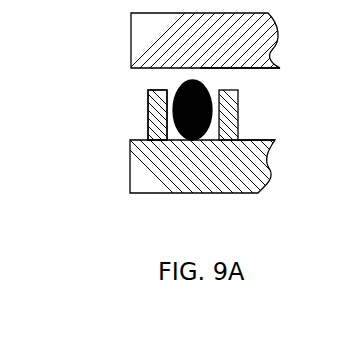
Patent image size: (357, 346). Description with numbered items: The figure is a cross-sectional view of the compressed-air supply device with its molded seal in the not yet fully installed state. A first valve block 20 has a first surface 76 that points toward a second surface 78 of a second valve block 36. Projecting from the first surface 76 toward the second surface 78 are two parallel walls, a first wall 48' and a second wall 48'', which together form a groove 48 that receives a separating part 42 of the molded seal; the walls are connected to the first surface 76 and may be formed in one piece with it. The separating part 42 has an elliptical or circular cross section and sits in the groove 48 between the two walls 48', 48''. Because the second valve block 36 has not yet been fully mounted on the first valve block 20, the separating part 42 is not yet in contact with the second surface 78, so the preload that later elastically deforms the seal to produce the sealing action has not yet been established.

The second valve block 36 is at (266, 28).
The second surface 78 is at (256, 68).
The first valve block 20 is at (251, 187).
The first surface 76 is at (257, 138).
The groove 48 is at (115, 119).
The first wall 48' is at (100, 137).
The second wall 48'' is at (246, 119).
The separating part 42 is at (178, 88).